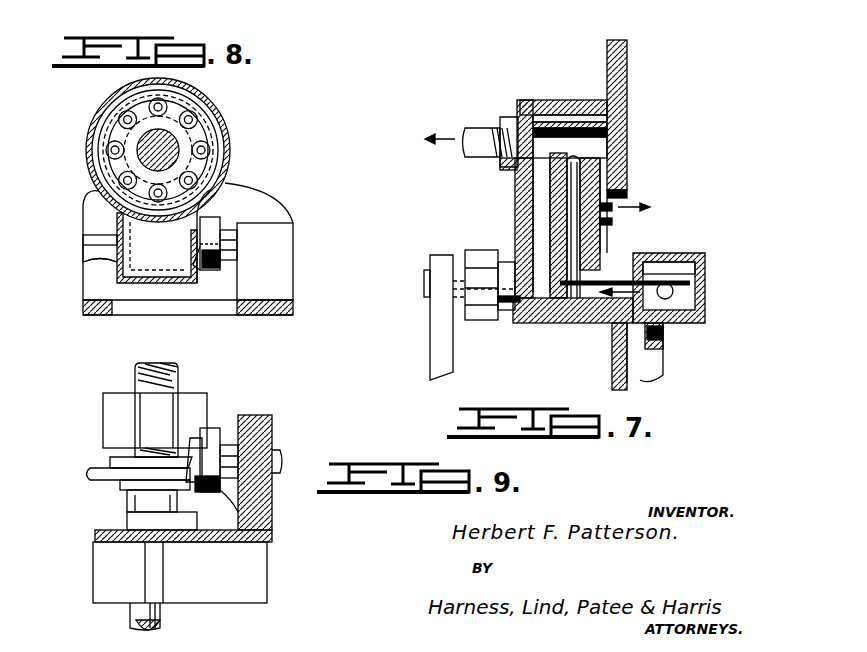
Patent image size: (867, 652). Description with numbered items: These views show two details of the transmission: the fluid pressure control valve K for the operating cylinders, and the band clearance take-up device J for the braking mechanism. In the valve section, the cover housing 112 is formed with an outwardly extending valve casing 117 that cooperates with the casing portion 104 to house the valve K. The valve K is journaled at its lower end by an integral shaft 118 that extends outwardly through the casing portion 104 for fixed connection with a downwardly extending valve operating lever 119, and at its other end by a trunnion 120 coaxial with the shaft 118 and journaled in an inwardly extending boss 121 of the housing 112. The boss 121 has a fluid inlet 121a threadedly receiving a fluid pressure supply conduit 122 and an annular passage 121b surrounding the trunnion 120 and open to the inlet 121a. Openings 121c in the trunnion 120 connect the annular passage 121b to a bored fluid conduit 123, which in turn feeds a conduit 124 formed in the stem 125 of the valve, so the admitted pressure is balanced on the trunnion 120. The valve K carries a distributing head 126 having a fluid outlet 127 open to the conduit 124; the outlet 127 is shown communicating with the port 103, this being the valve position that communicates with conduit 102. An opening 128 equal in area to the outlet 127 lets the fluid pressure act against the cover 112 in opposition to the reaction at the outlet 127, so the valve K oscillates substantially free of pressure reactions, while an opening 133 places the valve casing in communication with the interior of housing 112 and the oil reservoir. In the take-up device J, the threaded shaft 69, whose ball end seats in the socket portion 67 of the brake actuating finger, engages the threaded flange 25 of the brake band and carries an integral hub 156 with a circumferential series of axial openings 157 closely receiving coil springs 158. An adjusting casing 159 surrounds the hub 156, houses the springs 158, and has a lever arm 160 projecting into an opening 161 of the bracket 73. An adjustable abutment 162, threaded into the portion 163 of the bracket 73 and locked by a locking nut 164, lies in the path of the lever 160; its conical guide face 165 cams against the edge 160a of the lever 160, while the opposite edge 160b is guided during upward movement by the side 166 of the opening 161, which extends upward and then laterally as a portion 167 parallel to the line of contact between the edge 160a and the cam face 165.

In FIG. 9, the flange 25 is at (106, 398).
In FIG. 9, the socket portion 67 is at (142, 522).
In FIG. 8, the threaded shaft 69 is at (142, 136).
In FIG. 9, the threaded shaft 69 is at (140, 364).
In FIG. 9, the bracket 73 is at (272, 554).
In FIG. 7, the conduit 102 is at (478, 132).
In FIG. 7, the port 103 is at (525, 100).
In FIG. 7, the casing portion 104 is at (515, 185).
In FIG. 7, the cover housing 112 is at (628, 60).
In FIG. 7, the valve casing 117 is at (585, 100).
In FIG. 7, the shaft 118 is at (517, 280).
In FIG. 7, the valve operating lever 119 is at (430, 343).
In FIG. 7, the trunnion 120 is at (650, 268).
In FIG. 7, the boss 121 is at (700, 253).
In FIG. 7, the fluid inlet 121a is at (665, 338).
In FIG. 7, the annular passage 121b is at (668, 263).
In FIG. 7, the openings 121c is at (700, 266).
In FIG. 7, the fluid pressure supply conduit 122 is at (662, 372).
In FIG. 7, the fluid conduit 123 is at (612, 336).
In FIG. 7, the conduit 124 is at (585, 180).
In FIG. 7, the stem 125 is at (578, 193).
In FIG. 7, the distributing head 126 is at (552, 116).
In FIG. 7, the fluid outlet 127 is at (541, 122).
In FIG. 7, the opening 128 is at (607, 148).
In FIG. 7, the opening 133 is at (620, 217).
In FIG. 8, the hub 156 is at (201, 132).
In FIG. 8, the openings 157 is at (216, 160).
In FIG. 8, the coil springs 158 is at (206, 149).
In FIG. 8, the adjusting casing 159 is at (212, 112).
In FIG. 9, the adjusting casing 159 is at (88, 470).
In FIG. 8, the lever arm 160 is at (172, 284).
In FIG. 9, the lever arm 160 is at (126, 501).
In FIG. 8, the edge 160a is at (190, 268).
In FIG. 9, the edge 160a is at (205, 506).
In FIG. 8, the opposite edge 160b is at (118, 268).
In FIG. 9, the opposite edge 160b is at (118, 461).
In FIG. 8, the opening 161 is at (218, 312).
In FIG. 9, the opening 161 is at (272, 509).
In FIG. 8, the adjustable abutment 162 is at (216, 220).
In FIG. 9, the adjustable abutment 162 is at (210, 430).
In FIG. 9, the portion 163 is at (274, 421).
In FIG. 8, the locking nut 164 is at (222, 232).
In FIG. 9, the locking nut 164 is at (230, 447).
In FIG. 8, the conical guide face 165 is at (200, 268).
In FIG. 9, the conical guide face 165 is at (192, 440).
In FIG. 9, the side 166 is at (126, 522).
In FIG. 8, the portion 167 is at (116, 266).
In FIG. 9, the portion 167 is at (118, 484).
In FIG. 8, the band clearance take-up device J is at (88, 146).
In FIG. 9, the band clearance take-up device J is at (112, 458).
In FIG. 7, the valve K is at (568, 128).